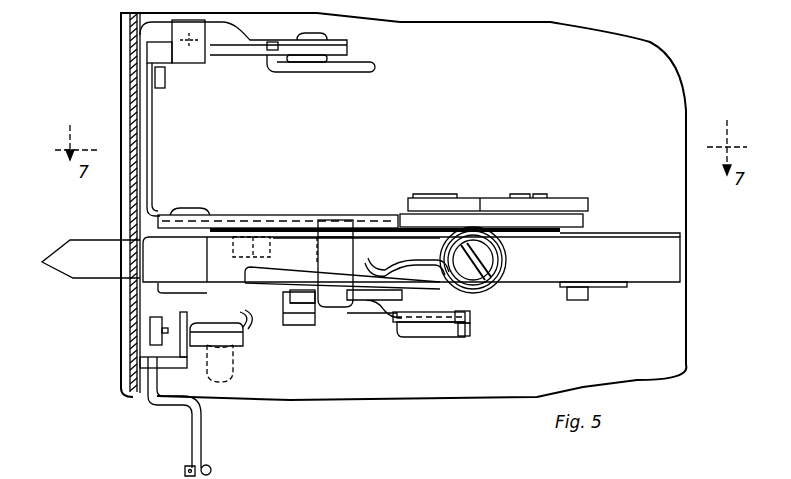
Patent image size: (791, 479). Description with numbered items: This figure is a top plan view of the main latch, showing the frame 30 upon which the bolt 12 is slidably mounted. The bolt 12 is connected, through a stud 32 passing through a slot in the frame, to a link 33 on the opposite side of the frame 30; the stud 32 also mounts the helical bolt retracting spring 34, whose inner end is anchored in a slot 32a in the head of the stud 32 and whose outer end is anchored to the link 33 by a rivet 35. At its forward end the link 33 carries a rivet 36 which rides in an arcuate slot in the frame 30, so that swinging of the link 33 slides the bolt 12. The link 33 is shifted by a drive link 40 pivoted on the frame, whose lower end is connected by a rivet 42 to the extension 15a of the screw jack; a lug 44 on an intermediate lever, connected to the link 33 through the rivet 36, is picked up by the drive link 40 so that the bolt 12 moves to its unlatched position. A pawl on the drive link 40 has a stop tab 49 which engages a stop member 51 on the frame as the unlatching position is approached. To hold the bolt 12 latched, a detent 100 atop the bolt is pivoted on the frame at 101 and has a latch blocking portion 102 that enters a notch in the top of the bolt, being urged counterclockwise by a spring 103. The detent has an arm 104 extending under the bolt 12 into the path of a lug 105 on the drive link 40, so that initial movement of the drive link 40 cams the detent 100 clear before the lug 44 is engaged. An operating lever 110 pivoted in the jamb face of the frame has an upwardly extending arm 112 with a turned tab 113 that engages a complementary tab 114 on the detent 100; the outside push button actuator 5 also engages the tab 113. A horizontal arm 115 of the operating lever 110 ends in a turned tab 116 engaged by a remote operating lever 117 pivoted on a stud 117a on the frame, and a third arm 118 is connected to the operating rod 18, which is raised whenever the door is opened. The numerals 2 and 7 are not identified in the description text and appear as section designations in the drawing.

The housing wall 2 is at (133, 100).
The outside push button actuator 5 is at (225, 382).
The contact blade 7 is at (362, 73).
The bolt 12 is at (100, 268).
The extension of the screw jack device 15a is at (470, 332).
The operating rod 18 is at (210, 466).
The frame 30 is at (368, 233).
The stud 32 is at (543, 194).
The slot 32a is at (521, 194).
The link 33 is at (345, 227).
The bolt retracting spring 34 is at (585, 200).
The rivet 35 is at (437, 194).
The rivet 36 is at (185, 208).
The drive link 40 is at (470, 320).
The rivet 42 is at (430, 337).
The lug 44 is at (293, 310).
The stop tab 49 is at (295, 325).
The stop member 51 is at (578, 300).
The detent 100 is at (290, 248).
The pivot 101 is at (485, 262).
The latch blocking portion 102 is at (255, 237).
The spring 103 is at (490, 285).
The arm 104 is at (322, 220).
The lug 105 is at (360, 313).
The operating lever 110 is at (150, 406).
The arm 112 is at (178, 345).
The turned tab 113 is at (210, 346).
The tab 114 is at (248, 318).
The arm 115 is at (150, 133).
The turned tab 116 is at (155, 50).
The remote operating lever 117 is at (228, 56).
The stud 117a is at (296, 72).
The third arm 118 is at (188, 415).